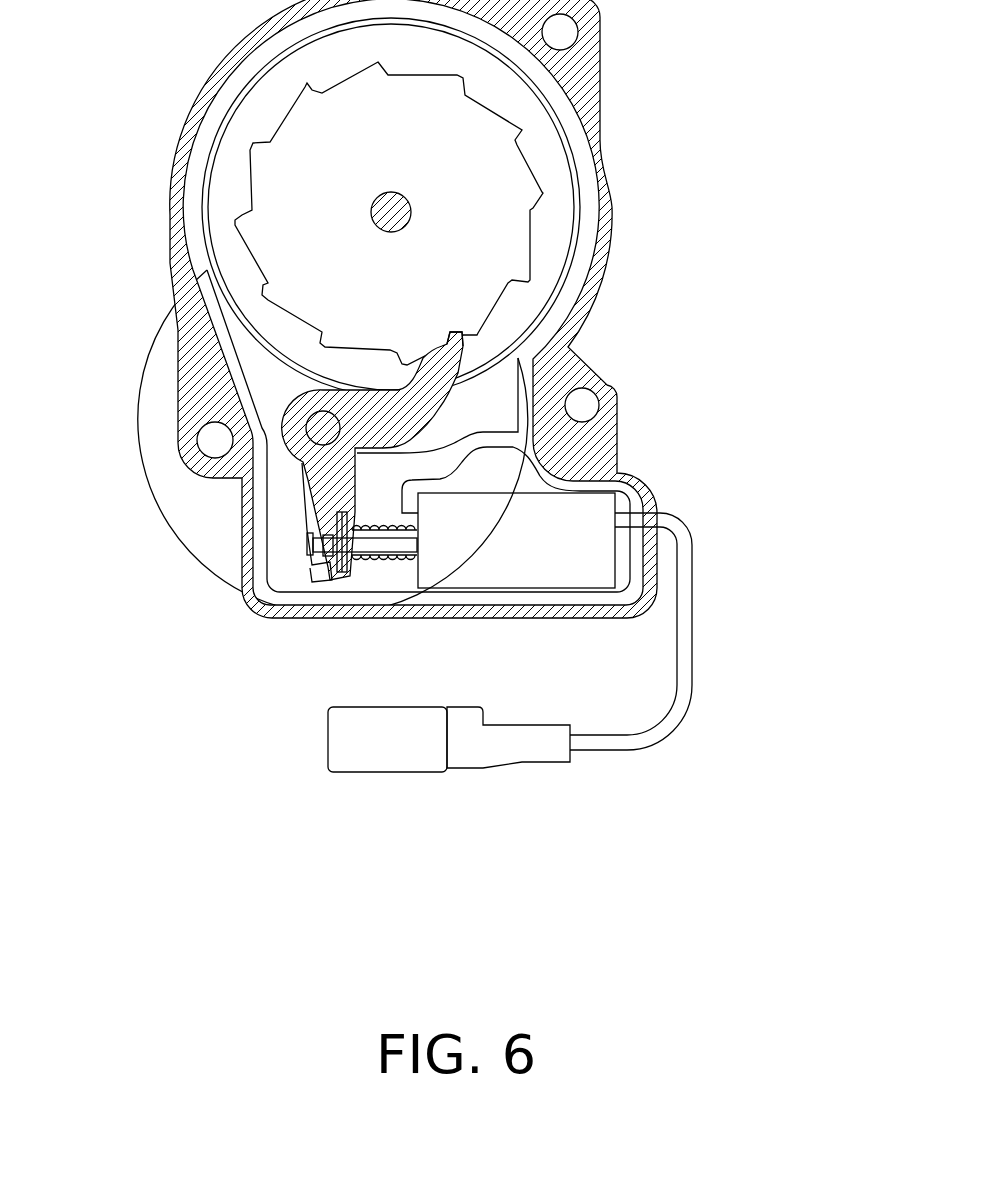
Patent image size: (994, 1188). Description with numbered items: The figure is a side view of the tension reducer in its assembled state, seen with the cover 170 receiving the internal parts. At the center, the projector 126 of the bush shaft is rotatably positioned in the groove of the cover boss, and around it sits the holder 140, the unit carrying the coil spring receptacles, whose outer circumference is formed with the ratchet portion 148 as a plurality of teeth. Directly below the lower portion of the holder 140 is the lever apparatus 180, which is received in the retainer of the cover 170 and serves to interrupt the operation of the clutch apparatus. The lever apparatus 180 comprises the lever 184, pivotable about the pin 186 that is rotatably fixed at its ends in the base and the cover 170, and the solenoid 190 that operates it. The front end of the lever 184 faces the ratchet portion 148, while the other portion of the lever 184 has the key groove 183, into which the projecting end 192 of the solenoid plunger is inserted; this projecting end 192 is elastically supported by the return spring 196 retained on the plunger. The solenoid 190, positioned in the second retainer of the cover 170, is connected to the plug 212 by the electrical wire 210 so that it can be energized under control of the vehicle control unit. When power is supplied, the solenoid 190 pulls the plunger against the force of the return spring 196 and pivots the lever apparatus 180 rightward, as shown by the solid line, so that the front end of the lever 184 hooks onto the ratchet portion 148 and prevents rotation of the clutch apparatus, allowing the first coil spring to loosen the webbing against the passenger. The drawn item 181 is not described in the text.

The cover 170 is at (598, 67).
The projector 126 is at (411, 203).
The holder 140 is at (538, 250).
The ratchet portion 148 is at (483, 333).
The lever 184 is at (458, 372).
The pin 186 is at (318, 425).
The lever apparatus 180 is at (301, 472).
The plate 181 is at (305, 503).
The key groove 183 is at (308, 543).
The projecting end 192 is at (335, 565).
The return spring 196 is at (403, 562).
The solenoid 190 is at (560, 553).
The electrical wire 210 is at (683, 618).
The plug 212 is at (399, 753).